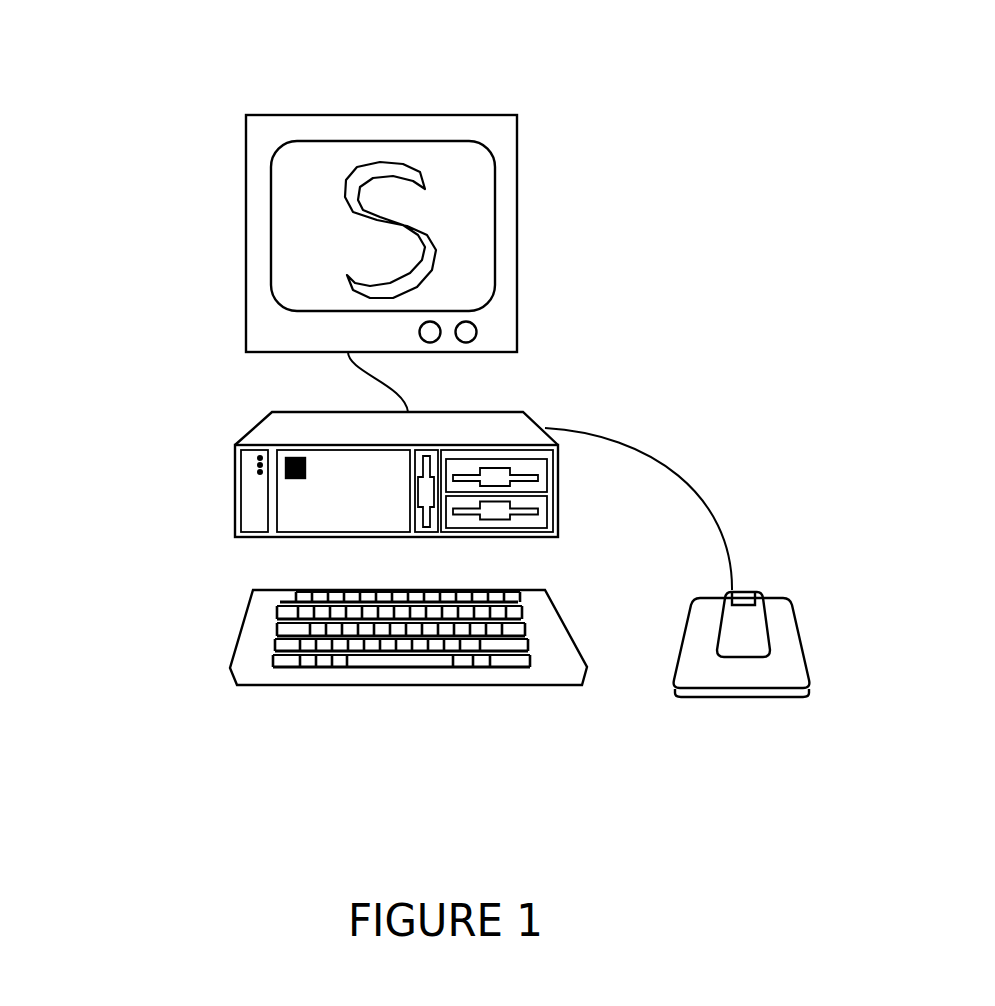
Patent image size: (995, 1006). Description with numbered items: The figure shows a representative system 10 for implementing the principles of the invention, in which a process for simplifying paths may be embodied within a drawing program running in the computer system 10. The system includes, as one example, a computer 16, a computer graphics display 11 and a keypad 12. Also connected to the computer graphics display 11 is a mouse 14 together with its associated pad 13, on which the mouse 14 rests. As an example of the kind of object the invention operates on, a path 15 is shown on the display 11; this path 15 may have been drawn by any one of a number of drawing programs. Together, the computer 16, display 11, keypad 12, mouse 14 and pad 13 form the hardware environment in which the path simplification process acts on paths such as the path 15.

The representative system 10 is at (102, 130).
The computer graphics display 11 is at (470, 195).
The keypad 12 is at (398, 685).
The pad 13 is at (781, 713).
The mouse 14 is at (748, 645).
The path 15 is at (422, 172).
The computer 16 is at (460, 501).